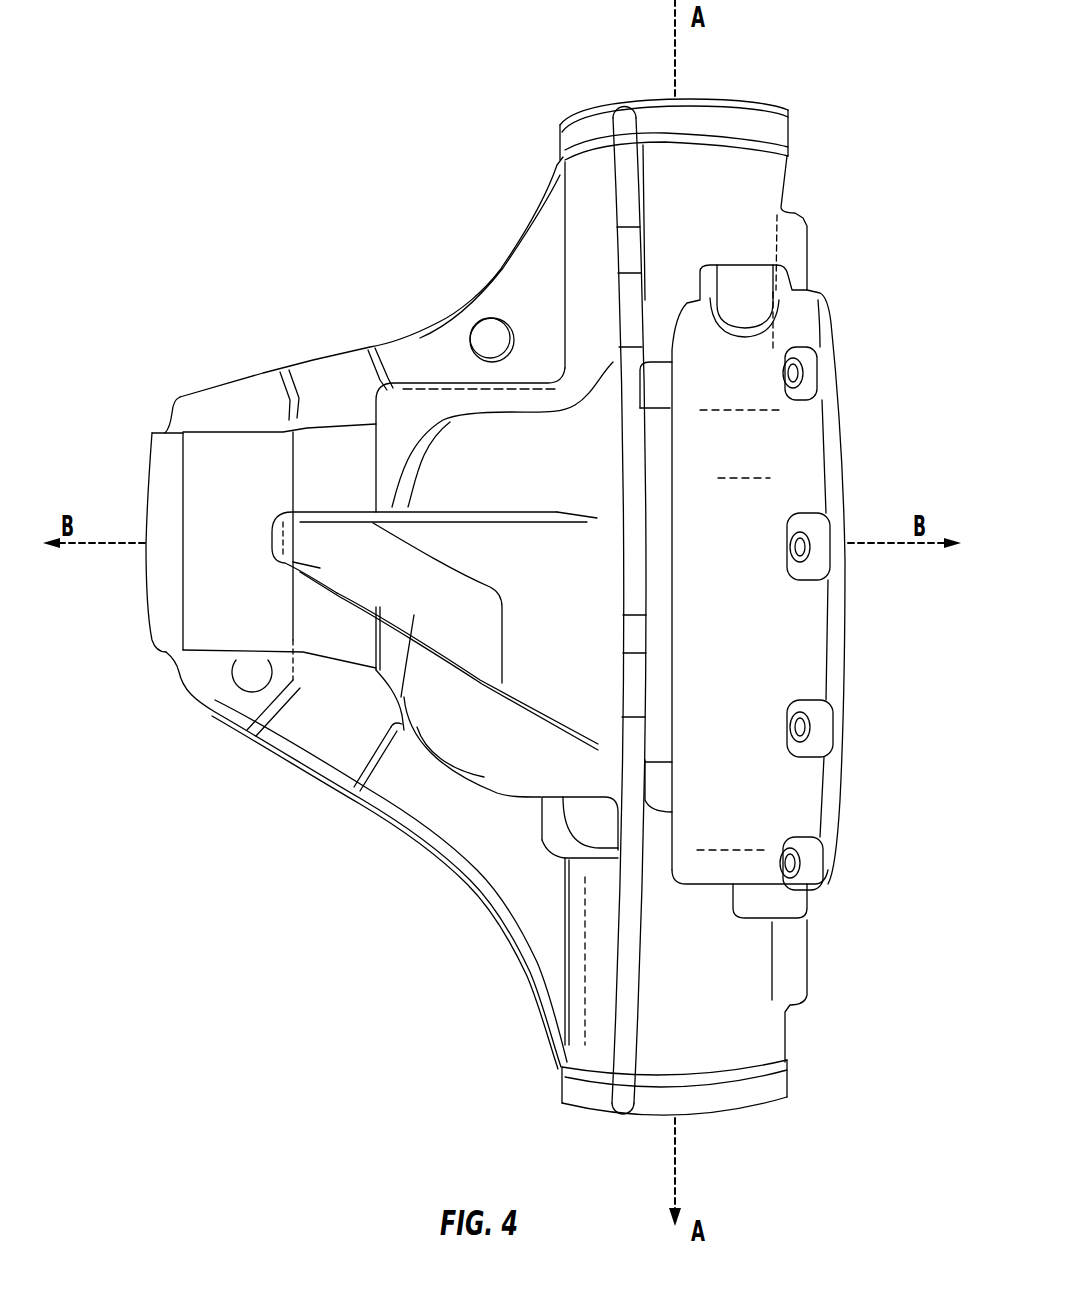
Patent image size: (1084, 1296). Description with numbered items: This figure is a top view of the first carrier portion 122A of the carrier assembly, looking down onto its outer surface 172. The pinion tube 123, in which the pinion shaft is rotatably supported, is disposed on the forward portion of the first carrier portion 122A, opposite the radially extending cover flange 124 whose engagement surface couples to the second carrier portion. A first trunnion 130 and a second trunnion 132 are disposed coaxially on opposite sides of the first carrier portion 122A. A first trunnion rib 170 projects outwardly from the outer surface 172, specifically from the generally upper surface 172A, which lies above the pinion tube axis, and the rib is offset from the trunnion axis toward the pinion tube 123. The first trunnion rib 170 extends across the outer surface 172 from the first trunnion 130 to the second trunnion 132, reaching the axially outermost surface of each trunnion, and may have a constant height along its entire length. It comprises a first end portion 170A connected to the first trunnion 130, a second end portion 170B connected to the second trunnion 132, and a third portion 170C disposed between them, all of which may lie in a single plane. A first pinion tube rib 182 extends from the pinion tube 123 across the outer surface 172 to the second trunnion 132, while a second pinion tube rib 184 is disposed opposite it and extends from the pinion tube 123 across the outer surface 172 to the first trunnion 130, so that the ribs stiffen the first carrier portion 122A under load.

The first carrier portion 122A is at (374, 182).
The pinion tube 123 is at (170, 453).
The cover flange 124 is at (832, 447).
The first trunnion 130 is at (745, 127).
The second trunnion 132 is at (777, 1088).
The first trunnion rib 170 is at (627, 950).
The first end portion 170A is at (626, 175).
The second end portion 170B is at (627, 1032).
The third portion 170C is at (635, 620).
The outer surface 172 is at (520, 438).
The upper surface 172A is at (593, 733).
The first pinion tube rib 182 is at (423, 810).
The second pinion tube rib 184 is at (320, 375).